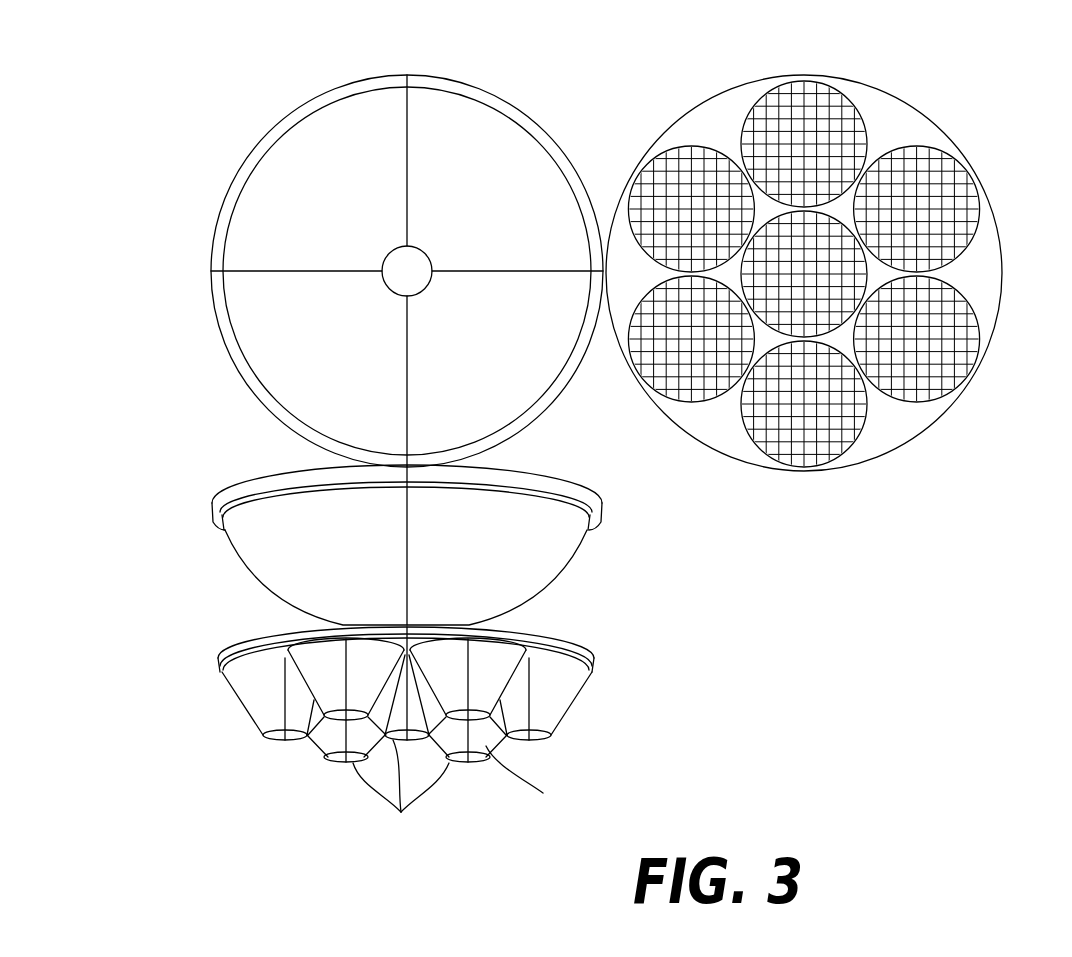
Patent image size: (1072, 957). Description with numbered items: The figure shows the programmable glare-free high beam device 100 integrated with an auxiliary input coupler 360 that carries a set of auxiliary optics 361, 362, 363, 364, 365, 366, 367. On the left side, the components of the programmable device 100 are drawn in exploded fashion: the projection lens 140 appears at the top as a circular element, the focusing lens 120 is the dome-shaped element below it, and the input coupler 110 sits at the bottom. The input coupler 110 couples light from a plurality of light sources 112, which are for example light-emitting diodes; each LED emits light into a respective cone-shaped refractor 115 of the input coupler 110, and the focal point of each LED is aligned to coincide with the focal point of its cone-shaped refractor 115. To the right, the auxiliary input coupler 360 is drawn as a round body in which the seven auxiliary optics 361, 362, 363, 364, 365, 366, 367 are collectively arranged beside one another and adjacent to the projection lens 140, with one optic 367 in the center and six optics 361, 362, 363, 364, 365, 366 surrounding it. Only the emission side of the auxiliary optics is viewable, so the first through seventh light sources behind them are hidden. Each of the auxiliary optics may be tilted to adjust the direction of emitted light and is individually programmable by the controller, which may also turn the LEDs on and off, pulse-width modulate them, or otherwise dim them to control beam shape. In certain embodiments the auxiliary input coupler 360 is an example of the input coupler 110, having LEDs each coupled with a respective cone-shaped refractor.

The programmable glare-free high beam device 100 is at (243, 88).
The projection lens 140 is at (268, 185).
The focusing lens 120 is at (272, 557).
The input coupler 110 is at (203, 699).
The light sources 112 is at (378, 791).
The cone-shaped refractor 115 is at (500, 687).
The auxiliary input coupler 360 is at (928, 460).
The auxiliary optic 361 is at (823, 105).
The auxiliary optic 362 is at (958, 200).
The auxiliary optic 363 is at (960, 348).
The auxiliary optic 364 is at (818, 457).
The auxiliary optic 365 is at (668, 378).
The auxiliary optic 366 is at (647, 185).
The auxiliary optic 367 is at (782, 233).